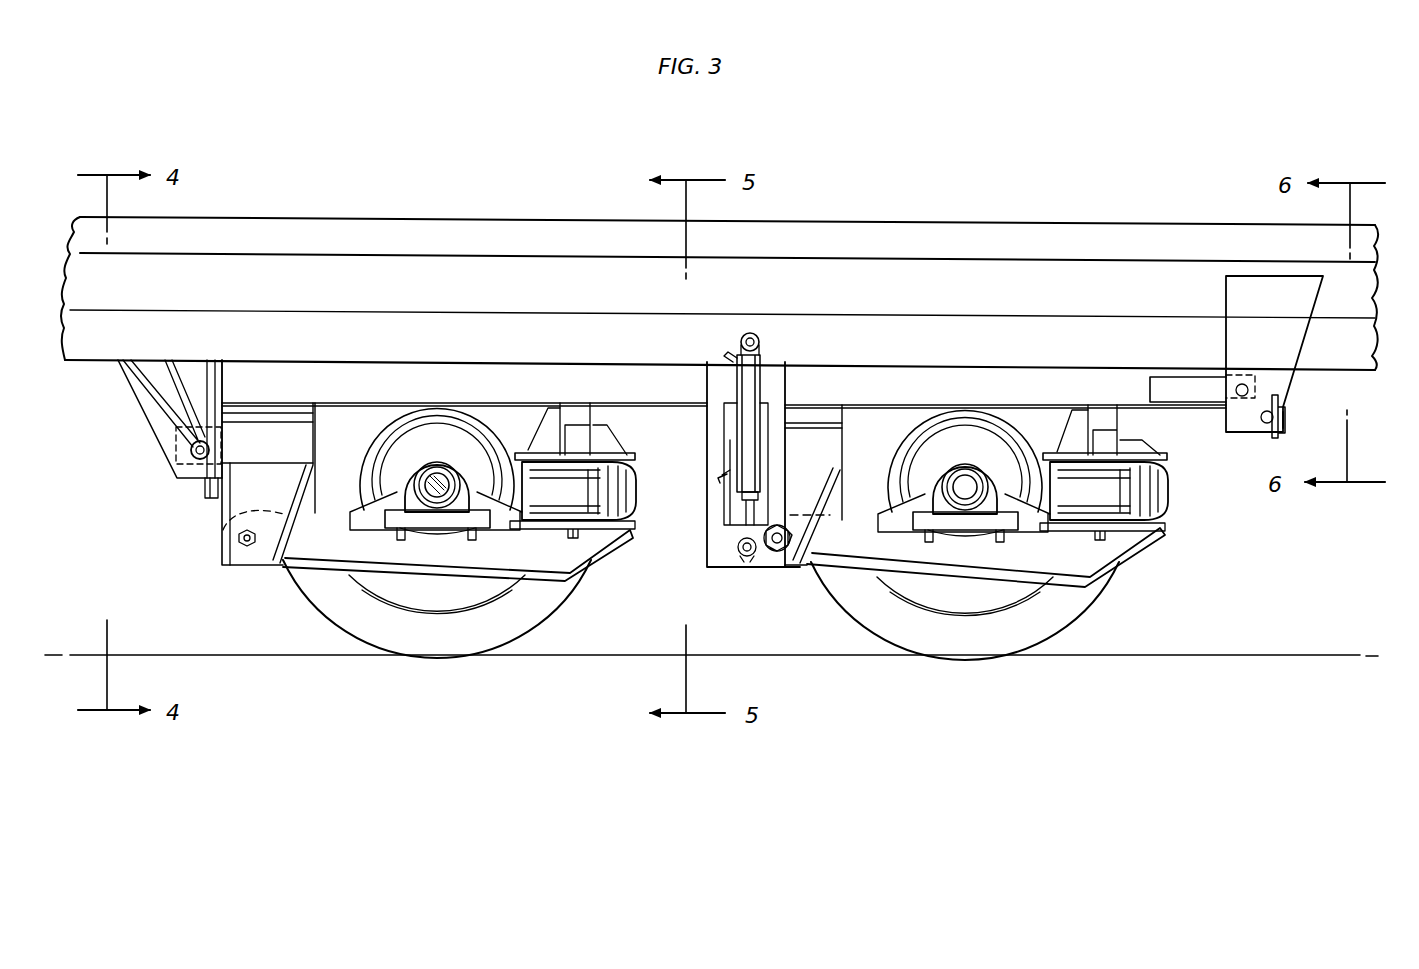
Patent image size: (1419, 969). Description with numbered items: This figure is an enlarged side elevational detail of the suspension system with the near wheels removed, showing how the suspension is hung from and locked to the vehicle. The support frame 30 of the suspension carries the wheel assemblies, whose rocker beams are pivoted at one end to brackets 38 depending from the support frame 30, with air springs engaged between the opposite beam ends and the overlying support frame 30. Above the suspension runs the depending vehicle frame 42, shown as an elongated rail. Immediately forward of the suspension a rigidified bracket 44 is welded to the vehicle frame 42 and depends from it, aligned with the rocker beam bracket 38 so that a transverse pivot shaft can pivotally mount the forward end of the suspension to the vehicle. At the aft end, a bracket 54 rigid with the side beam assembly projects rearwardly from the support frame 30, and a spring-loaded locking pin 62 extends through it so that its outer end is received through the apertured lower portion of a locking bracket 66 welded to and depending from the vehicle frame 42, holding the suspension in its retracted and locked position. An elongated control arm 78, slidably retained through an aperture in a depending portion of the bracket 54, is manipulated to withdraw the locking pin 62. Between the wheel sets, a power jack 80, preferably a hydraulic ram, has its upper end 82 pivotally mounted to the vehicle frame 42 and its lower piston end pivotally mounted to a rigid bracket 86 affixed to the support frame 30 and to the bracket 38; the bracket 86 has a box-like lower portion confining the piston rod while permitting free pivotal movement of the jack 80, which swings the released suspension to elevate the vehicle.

The support frame 30 is at (542, 380).
The bracket 38 is at (228, 505).
The vehicle frame 42 is at (1344, 360).
The rigidified bracket 44 is at (158, 432).
The bracket 54 is at (1166, 385).
The locking pin 62 is at (1234, 388).
The locking bracket 66 is at (1240, 306).
The control arm 78 is at (1275, 438).
The power jack 80 is at (768, 387).
The upper end of jack 82 is at (762, 343).
The rigid bracket 86 is at (712, 548).